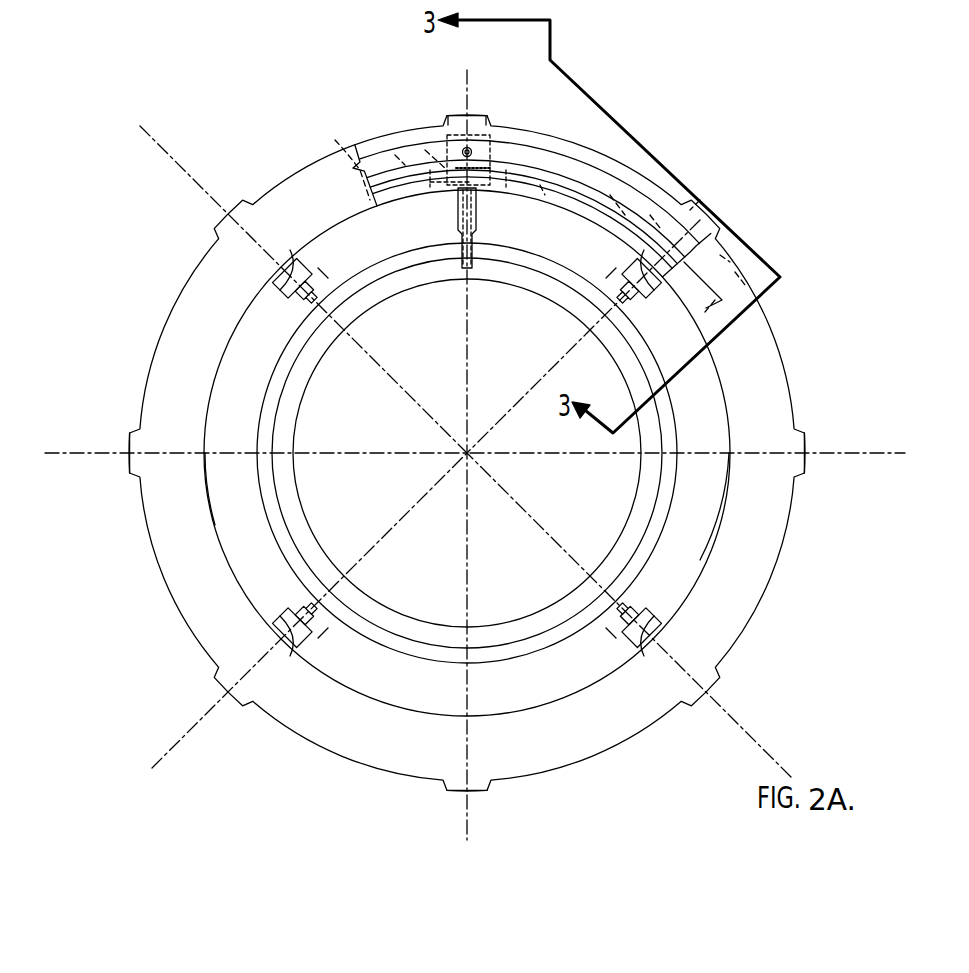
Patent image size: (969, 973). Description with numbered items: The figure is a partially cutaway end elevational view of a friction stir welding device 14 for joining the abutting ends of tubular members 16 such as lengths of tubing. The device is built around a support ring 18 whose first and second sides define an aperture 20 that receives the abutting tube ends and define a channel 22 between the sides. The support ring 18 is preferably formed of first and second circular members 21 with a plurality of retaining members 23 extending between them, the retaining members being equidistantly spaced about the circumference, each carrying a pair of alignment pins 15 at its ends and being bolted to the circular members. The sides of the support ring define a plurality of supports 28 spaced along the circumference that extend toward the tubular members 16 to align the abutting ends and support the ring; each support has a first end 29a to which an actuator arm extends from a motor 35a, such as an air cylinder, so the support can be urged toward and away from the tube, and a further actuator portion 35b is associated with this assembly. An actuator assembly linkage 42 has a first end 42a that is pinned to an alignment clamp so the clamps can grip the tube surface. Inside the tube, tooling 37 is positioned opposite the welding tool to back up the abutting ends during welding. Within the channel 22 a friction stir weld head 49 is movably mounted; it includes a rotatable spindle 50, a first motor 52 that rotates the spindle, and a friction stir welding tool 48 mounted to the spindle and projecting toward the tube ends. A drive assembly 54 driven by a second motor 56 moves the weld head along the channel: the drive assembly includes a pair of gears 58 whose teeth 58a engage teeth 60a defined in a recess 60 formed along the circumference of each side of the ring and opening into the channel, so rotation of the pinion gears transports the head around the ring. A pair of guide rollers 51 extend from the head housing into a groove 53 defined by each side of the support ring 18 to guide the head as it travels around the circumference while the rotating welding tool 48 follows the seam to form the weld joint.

The friction stir welding device 14 is at (108, 240).
The alignment pins 15 is at (455, 118).
The tubular members 16 is at (676, 477).
The support ring 18 is at (742, 612).
The aperture 20 is at (228, 500).
The circular members 21 is at (180, 350).
The channel 22 is at (385, 155).
The retaining members 23 is at (242, 200).
The supports 28 is at (335, 285).
The first end of support 29a is at (300, 290).
The motor 35a is at (702, 200).
The wall portion 35b is at (716, 302).
The tooling 37 is at (657, 497).
The actuator assembly linkage 42 is at (293, 262).
The first end of actuator assembly linkage 42a is at (305, 300).
The friction stir welding tool 48 is at (473, 240).
The friction stir weld head 49 is at (345, 172).
The rotatable spindle 50 is at (462, 214).
The guide rollers 51 is at (400, 155).
The first motor 52 is at (505, 180).
The groove 53 is at (615, 195).
The drive assembly 54 is at (485, 150).
The second motor 56 is at (430, 150).
The gears 58 is at (485, 156).
The gear teeth 58a is at (440, 190).
The recess 60 is at (655, 215).
The recess teeth 60a is at (722, 256).